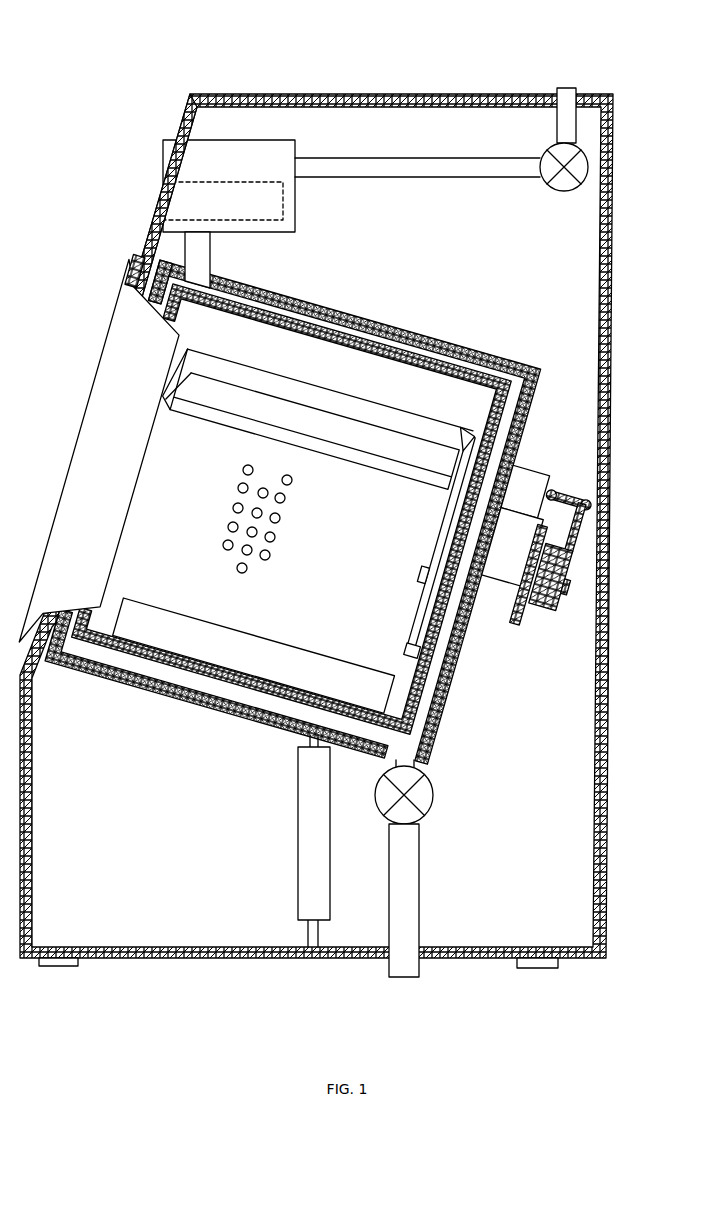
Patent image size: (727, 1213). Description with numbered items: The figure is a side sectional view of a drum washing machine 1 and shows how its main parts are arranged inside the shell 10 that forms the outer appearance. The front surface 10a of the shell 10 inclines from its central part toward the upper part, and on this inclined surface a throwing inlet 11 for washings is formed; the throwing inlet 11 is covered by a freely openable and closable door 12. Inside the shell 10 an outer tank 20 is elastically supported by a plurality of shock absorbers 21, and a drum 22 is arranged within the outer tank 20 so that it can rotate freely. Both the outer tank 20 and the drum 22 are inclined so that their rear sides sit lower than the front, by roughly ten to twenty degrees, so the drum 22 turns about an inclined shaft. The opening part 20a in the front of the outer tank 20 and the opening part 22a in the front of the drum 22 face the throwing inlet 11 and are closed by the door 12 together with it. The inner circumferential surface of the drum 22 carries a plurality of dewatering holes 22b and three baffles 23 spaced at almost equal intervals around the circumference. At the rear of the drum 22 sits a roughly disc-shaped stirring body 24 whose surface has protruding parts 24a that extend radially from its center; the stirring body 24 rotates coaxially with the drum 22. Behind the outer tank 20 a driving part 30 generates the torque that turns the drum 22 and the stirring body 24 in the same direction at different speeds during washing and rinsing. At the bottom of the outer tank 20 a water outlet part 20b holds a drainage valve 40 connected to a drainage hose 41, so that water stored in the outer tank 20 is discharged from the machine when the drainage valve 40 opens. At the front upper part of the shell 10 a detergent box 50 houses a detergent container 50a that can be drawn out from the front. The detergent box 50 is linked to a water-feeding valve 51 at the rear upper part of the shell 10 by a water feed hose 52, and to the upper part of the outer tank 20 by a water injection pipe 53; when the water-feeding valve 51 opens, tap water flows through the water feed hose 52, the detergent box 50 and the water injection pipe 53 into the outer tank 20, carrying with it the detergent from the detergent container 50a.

The drum washing machine 1 is at (632, 111).
The shell 10 is at (230, 92).
The front surface 10a is at (157, 202).
The throwing inlet 11 is at (128, 267).
The door 12 is at (100, 393).
The outer tank 20 is at (442, 340).
The opening part 20a is at (156, 305).
The water outlet part 20b is at (411, 753).
The shock absorbers 21 is at (300, 807).
The drum 22 is at (377, 317).
The opening part 22a is at (196, 385).
The dewatering holes 22b is at (230, 510).
The baffles 23 is at (377, 462).
The stirring body 24 is at (444, 545).
The protruding parts 24a is at (442, 447).
The driving part 30 is at (544, 623).
The drainage valve 40 is at (441, 792).
The drainage hose 41 is at (420, 877).
The detergent box 50 is at (263, 138).
The detergent container 50a is at (222, 178).
The water-feeding valve 51 is at (553, 188).
The water feed hose 52 is at (416, 157).
The water injection pipe 53 is at (213, 253).